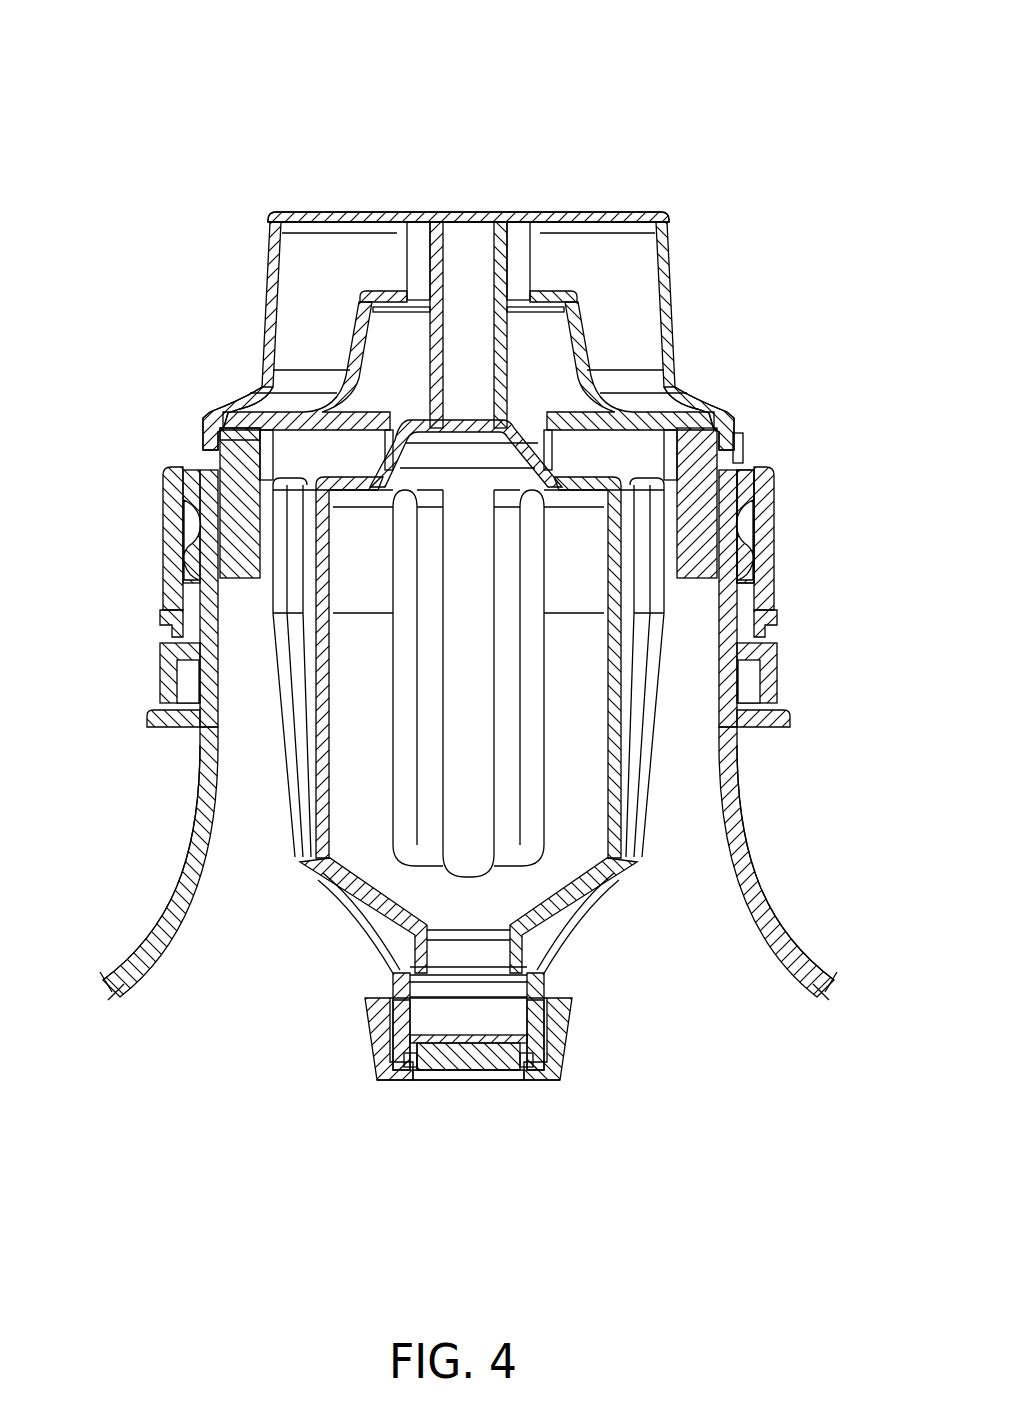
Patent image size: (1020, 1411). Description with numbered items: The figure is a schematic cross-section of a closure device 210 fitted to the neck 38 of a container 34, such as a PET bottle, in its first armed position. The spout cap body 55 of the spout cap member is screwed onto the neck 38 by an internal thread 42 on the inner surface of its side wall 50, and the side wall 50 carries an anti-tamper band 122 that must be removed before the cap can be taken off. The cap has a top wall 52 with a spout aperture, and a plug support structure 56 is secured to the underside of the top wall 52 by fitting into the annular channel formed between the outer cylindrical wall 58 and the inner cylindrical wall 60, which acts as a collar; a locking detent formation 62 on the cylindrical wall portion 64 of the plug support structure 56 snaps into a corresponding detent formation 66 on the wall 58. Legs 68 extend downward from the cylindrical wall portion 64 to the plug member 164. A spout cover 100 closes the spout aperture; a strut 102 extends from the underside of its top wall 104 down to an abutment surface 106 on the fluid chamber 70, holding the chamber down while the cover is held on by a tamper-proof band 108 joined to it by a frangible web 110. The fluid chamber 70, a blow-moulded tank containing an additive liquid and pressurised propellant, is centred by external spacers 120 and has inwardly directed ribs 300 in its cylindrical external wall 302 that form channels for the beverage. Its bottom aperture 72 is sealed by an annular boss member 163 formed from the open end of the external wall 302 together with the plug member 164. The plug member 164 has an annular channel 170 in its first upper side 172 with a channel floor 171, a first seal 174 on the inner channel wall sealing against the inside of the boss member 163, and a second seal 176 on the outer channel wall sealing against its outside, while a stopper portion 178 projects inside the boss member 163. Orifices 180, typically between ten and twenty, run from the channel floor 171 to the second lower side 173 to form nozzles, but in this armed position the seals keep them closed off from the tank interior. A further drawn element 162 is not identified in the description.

The closure device 210 is at (746, 110).
The spout cover 100 is at (366, 211).
The strut 102 is at (433, 360).
The top wall 104 is at (611, 211).
The abutment surface 106 is at (558, 240).
The spout cap body 55 is at (580, 318).
The top wall 52 is at (352, 360).
The outer cylindrical wall 58 is at (212, 414).
The frangible web 110 is at (727, 413).
The tamper-proof band 108 is at (752, 440).
The plug support structure 56 is at (733, 443).
The detent formation 66 is at (703, 457).
The locking detent formation 62 is at (222, 463).
The cylindrical wall portion 64 is at (192, 512).
The inner cylindrical wall 60 is at (195, 578).
The internal thread 42 is at (760, 567).
The side wall 50 is at (772, 630).
The anti-tamper band 122 is at (160, 680).
The neck 38 is at (733, 813).
The container 34 is at (792, 968).
The external spacers or ribs 120 is at (290, 783).
The external wall 302 is at (587, 813).
The inwardly directed ribs 300 is at (470, 823).
The fluid chamber 70 is at (327, 863).
The bottom aperture 72 is at (440, 955).
The inner wall 162 is at (347, 903).
The legs 68 is at (573, 930).
The annular boss member 163 is at (398, 1028).
The annular channel 170 is at (550, 1057).
The second seal 176 is at (557, 1018).
The channel floor 171 is at (400, 1070).
The orifices 180 is at (533, 1080).
The second lower side 173 is at (413, 1072).
The first upper side 172 is at (460, 1050).
The first seal 174 is at (507, 1073).
The stopper portion 178 is at (507, 1073).
The plug member 164 is at (443, 1067).